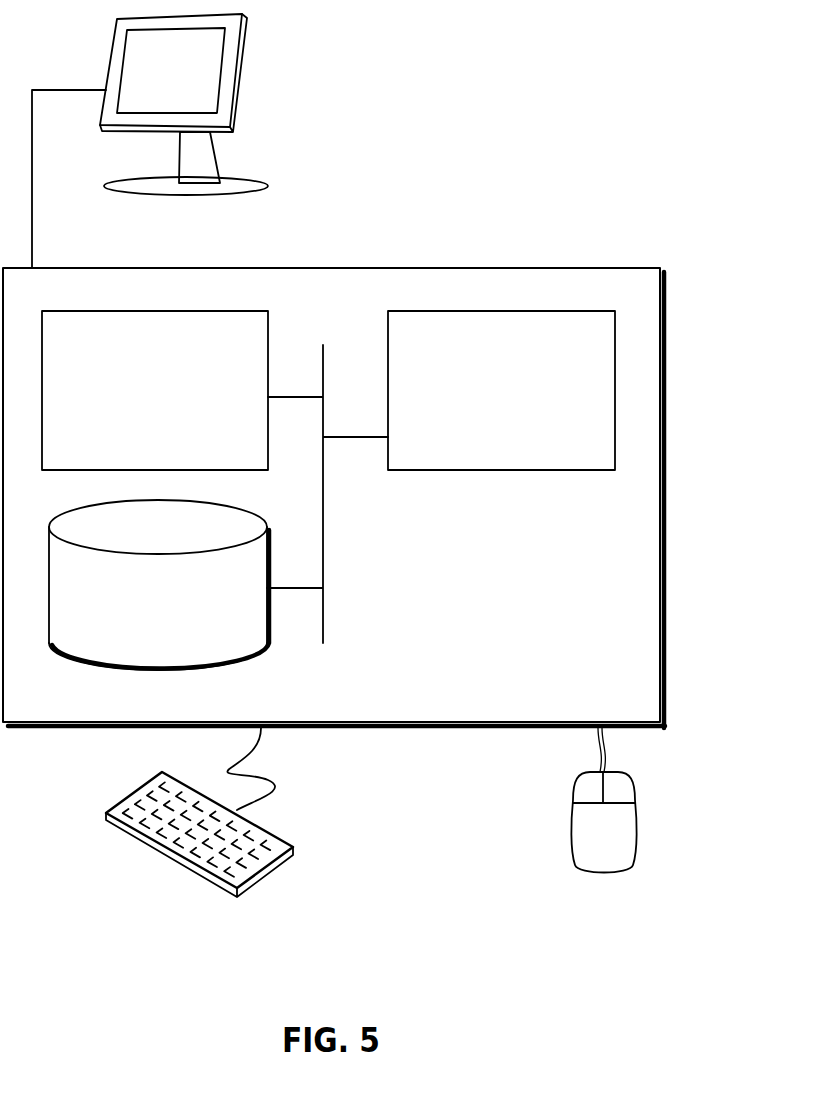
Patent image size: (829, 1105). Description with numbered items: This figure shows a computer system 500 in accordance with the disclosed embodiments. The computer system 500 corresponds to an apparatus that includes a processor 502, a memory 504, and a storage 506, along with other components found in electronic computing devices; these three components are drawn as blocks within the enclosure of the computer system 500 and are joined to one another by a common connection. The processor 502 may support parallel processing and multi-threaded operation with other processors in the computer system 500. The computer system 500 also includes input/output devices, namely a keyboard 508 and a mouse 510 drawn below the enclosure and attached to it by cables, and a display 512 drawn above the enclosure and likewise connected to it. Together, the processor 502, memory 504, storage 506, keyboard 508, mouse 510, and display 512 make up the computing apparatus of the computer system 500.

The computer system 500 is at (378, 247).
The processor 502 is at (485, 402).
The memory 504 is at (135, 402).
The storage 506 is at (142, 614).
The keyboard 508 is at (123, 833).
The mouse 510 is at (583, 845).
The display 512 is at (150, 141).